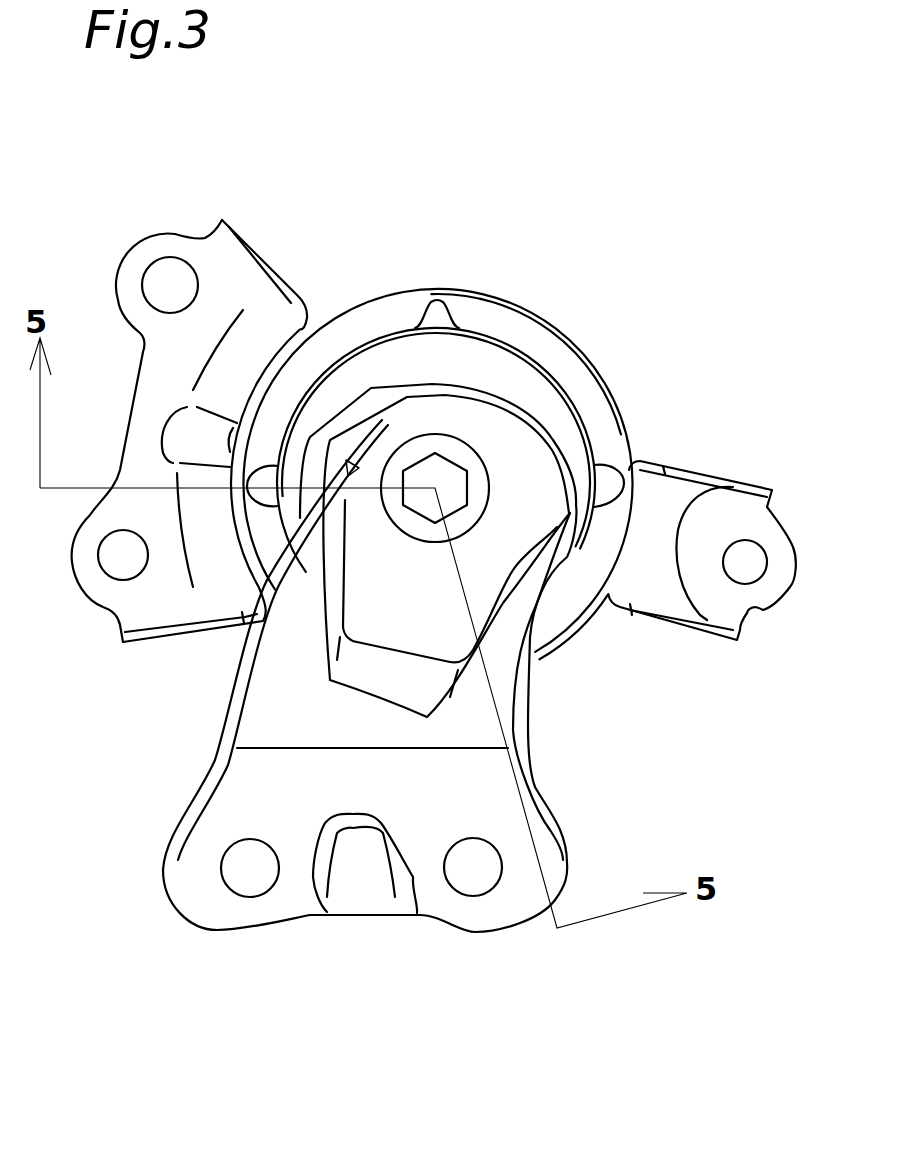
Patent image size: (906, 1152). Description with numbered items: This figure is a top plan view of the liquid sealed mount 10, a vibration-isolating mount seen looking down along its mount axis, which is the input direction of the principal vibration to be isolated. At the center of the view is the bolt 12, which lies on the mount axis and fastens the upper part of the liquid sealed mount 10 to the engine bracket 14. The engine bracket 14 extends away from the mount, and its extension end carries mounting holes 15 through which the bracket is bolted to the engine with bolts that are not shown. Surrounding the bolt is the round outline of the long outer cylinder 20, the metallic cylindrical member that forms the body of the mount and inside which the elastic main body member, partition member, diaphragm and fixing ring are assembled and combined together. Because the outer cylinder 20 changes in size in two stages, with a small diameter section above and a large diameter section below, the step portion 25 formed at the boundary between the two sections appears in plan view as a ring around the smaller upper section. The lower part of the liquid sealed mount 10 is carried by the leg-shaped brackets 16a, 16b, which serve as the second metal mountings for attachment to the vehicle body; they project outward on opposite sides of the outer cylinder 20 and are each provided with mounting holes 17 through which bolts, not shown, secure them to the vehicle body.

The liquid sealed mount 10 is at (418, 218).
The bolt 12 is at (462, 472).
The engine bracket 14 is at (257, 727).
The mounting holes 15 is at (240, 890).
The bracket 16a is at (147, 357).
The bracket 16b is at (722, 482).
The mounting holes 17 is at (157, 277).
The outer cylinder 20 is at (362, 320).
The step portion 25 is at (540, 332).